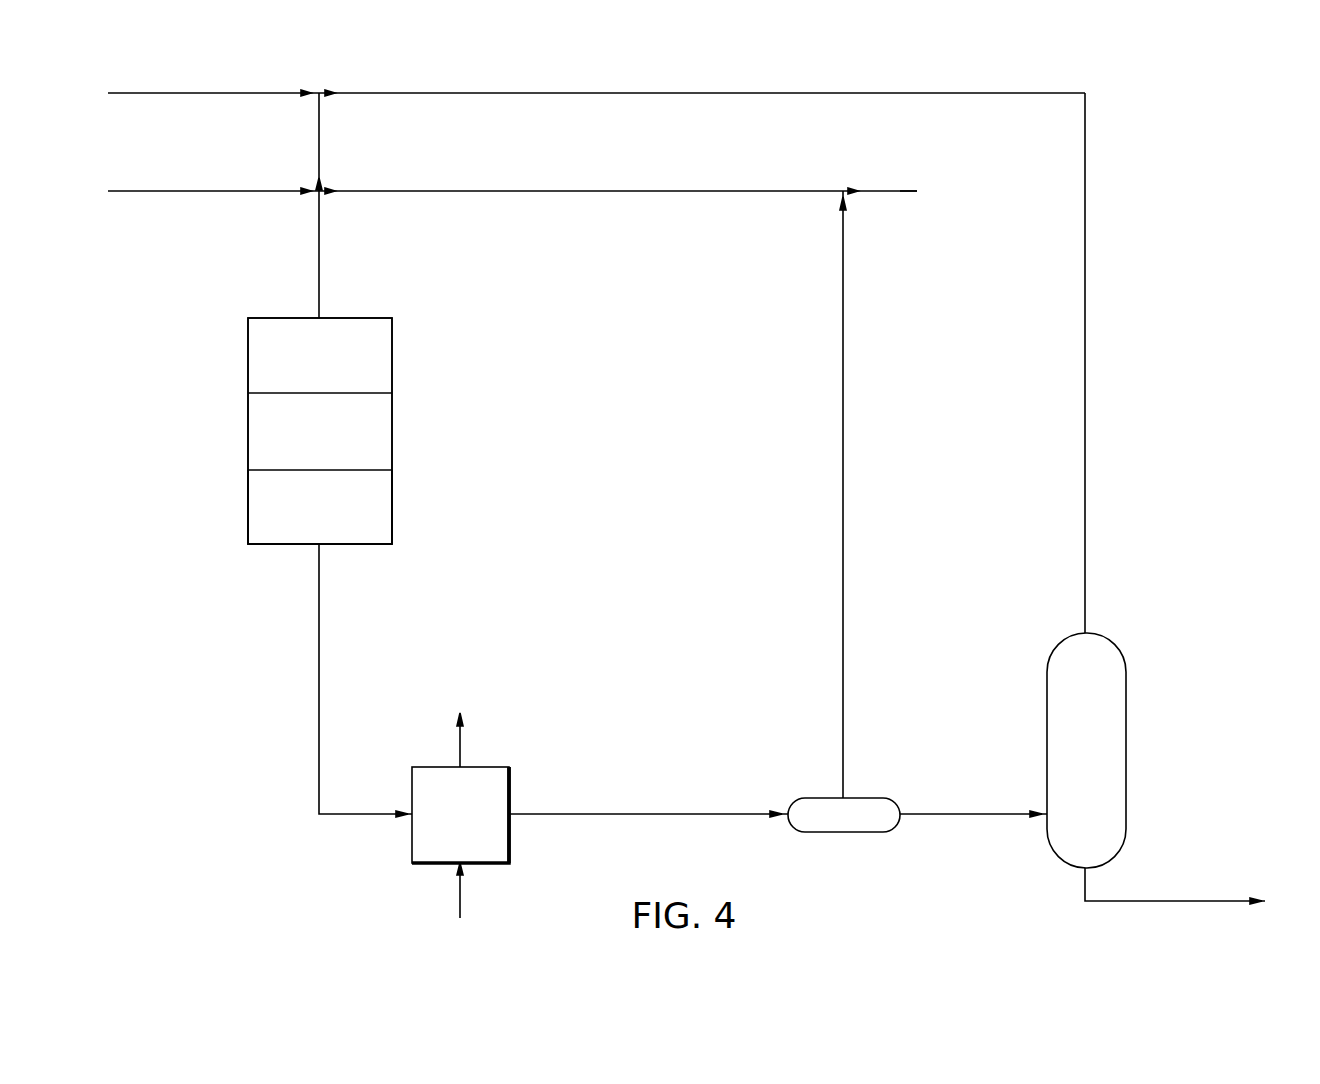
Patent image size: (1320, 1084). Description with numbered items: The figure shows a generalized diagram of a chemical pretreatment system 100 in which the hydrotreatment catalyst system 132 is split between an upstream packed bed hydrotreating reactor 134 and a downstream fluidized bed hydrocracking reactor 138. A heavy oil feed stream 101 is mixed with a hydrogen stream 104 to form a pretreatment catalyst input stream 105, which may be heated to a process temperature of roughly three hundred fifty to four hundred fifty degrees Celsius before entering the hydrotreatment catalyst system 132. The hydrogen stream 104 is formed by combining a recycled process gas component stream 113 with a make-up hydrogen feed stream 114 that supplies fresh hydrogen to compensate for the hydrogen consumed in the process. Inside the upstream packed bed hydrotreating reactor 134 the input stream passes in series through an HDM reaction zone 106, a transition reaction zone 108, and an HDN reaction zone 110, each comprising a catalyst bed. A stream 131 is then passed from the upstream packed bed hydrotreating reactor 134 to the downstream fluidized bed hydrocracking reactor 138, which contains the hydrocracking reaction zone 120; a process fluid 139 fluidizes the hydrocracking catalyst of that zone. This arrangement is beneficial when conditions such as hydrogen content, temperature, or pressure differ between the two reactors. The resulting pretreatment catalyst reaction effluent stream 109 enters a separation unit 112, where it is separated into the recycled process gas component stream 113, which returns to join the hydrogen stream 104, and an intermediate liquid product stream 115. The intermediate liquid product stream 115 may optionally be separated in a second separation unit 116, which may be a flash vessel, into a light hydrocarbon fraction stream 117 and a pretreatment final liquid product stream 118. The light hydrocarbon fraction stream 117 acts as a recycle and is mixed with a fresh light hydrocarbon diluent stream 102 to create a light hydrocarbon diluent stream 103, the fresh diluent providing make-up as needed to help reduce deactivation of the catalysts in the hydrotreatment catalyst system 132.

The pretreatment system 100 is at (1210, 132).
The heavy oil feed stream 101 is at (180, 192).
The fresh light hydrocarbon diluent stream 102 is at (186, 94).
The light hydrocarbon diluent stream 103 is at (322, 132).
The hydrogen stream 104 is at (518, 192).
The pretreatment catalyst input stream 105 is at (322, 228).
The HDM reaction zone 106 is at (320, 369).
The transition reaction zone 108 is at (320, 445).
The pretreatment catalyst reaction effluent stream 109 is at (556, 815).
The HDN reaction zone 110 is at (320, 507).
The separation unit 112 is at (844, 815).
The recycled process gas component stream 113 is at (845, 420).
The make-up hydrogen feed stream 114 is at (917, 192).
The intermediate liquid product stream 115 is at (958, 815).
The separation unit 116 is at (1086, 750).
The light hydrocarbon fraction stream 117 is at (1085, 370).
The pretreatment final liquid product stream 118 is at (1185, 900).
The hydrocracking reaction zone 120 is at (460, 815).
The stream 131 is at (321, 716).
The hydrotreatment catalyst system 132 is at (236, 612).
The upstream packed bed hydrotreating reactor 134 is at (393, 378).
The downstream fluidized bed hydrocracking reactor 138 is at (511, 790).
The process fluid 139 is at (462, 748).